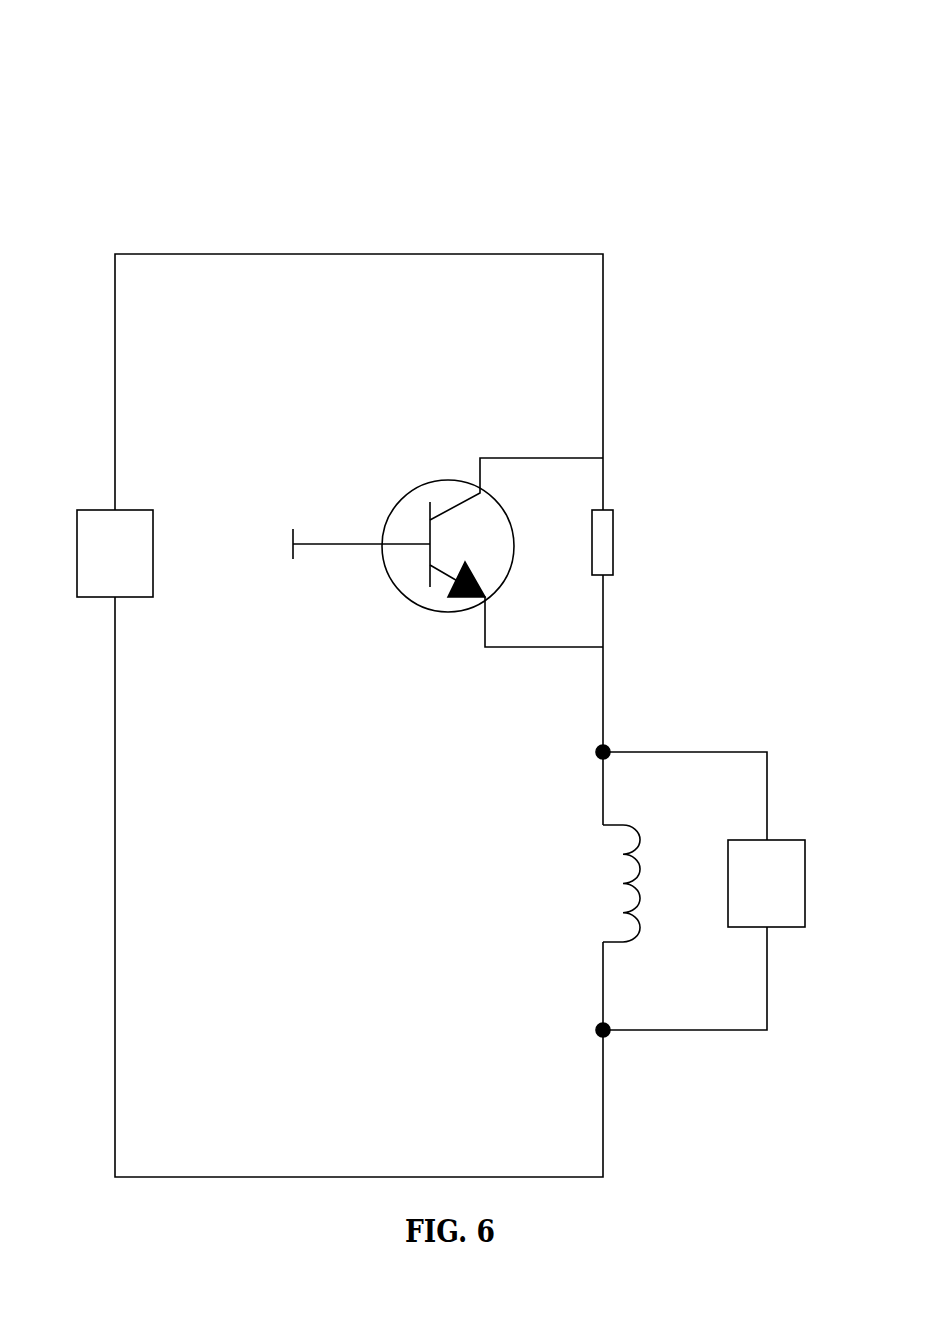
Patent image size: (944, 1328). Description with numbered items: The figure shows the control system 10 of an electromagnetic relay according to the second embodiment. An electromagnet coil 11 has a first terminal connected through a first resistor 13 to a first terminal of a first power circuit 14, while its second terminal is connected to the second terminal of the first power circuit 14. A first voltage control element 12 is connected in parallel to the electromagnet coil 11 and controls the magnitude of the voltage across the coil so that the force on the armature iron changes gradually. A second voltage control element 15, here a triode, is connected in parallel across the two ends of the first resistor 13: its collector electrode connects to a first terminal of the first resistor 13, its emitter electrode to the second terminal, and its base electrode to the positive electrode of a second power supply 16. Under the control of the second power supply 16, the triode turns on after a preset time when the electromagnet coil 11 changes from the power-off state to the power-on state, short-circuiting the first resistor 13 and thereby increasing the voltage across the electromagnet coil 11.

The control system 10 is at (505, 42).
The electromagnet coil 11 is at (601, 891).
The first voltage control element 12 is at (730, 891).
The first resistor 13 is at (625, 542).
The first power circuit 14 is at (95, 553).
The second voltage control element 15 is at (405, 492).
The second power supply 16 is at (334, 546).